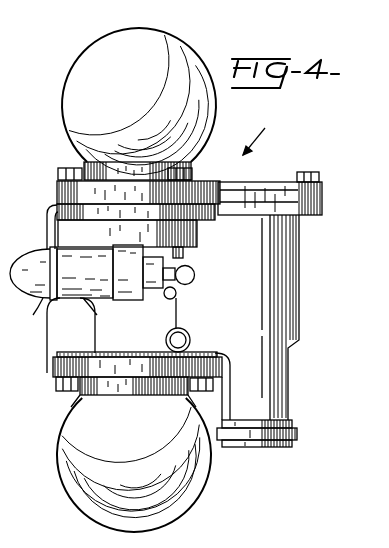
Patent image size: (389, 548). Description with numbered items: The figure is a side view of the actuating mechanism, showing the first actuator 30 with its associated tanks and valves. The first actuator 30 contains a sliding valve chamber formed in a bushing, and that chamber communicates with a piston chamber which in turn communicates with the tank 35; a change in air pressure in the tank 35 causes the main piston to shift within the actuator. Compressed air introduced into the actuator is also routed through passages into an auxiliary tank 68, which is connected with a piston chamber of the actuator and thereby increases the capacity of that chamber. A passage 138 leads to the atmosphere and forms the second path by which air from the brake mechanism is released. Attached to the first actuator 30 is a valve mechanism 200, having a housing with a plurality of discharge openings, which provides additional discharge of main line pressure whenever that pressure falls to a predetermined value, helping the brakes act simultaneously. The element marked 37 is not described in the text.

The tank 35 is at (177, 55).
The auxiliary tank 68 is at (98, 503).
The first actuator 30 is at (295, 258).
The valve mechanism 200 is at (38, 300).
The passage 138 is at (177, 293).
The ring 37 is at (190, 337).